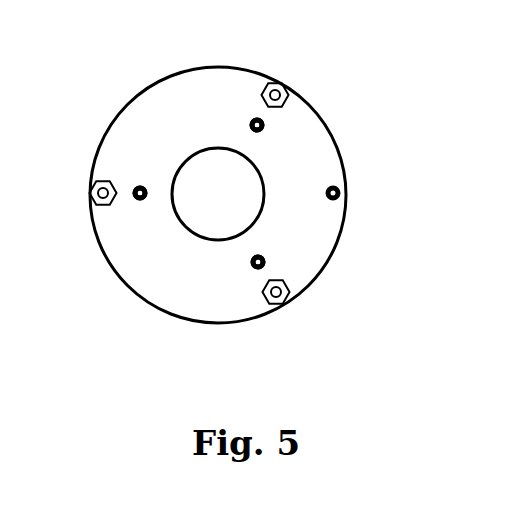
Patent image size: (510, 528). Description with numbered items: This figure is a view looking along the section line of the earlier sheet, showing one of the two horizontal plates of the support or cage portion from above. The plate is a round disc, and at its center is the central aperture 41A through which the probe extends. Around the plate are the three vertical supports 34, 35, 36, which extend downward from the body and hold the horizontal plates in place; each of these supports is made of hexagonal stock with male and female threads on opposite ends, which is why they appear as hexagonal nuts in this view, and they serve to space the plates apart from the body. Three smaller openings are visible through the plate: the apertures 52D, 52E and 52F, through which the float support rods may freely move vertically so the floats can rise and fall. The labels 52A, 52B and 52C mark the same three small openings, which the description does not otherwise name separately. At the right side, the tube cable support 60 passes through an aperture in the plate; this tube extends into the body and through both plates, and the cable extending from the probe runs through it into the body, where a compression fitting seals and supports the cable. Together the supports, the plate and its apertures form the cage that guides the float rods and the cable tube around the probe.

The vertical support 34 is at (90, 193).
The vertical support 35 is at (290, 292).
The vertical support 36 is at (291, 94).
The central aperture 41A is at (177, 218).
The pin hole 52A is at (255, 268).
The pin hole 52B is at (135, 188).
The pin hole 52C is at (252, 120).
The aperture 52D is at (256, 268).
The aperture 52E is at (137, 187).
The aperture 52F is at (255, 119).
The tube cable support 60 is at (338, 188).